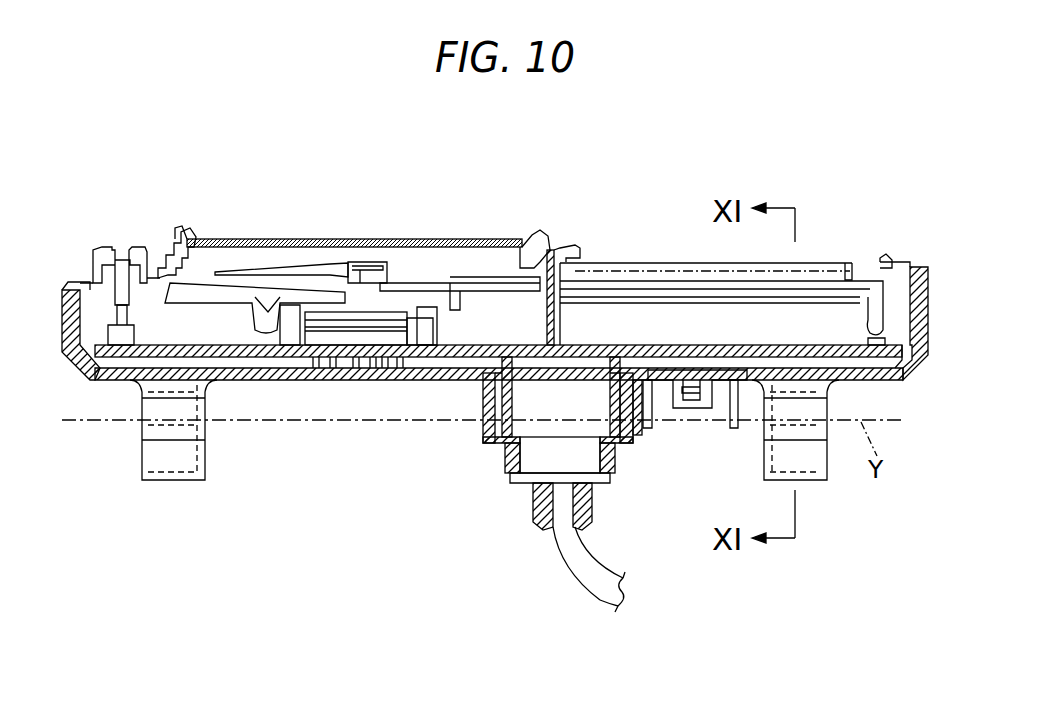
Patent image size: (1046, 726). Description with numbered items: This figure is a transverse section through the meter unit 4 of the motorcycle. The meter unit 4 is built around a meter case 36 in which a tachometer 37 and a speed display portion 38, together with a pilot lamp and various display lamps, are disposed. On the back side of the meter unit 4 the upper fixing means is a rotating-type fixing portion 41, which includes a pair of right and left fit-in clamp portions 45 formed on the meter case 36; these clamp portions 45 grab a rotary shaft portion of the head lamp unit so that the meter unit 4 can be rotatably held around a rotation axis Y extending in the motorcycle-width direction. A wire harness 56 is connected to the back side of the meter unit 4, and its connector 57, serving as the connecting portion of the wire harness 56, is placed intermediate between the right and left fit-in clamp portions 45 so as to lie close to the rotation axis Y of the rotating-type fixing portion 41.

The meter unit 4 is at (422, 232).
The meter case 36 is at (370, 382).
The tachometer 37 is at (254, 238).
The speed display portion 38 is at (630, 262).
The rotating-type fixing portion 41 is at (484, 460).
The fit-in clamp portions 45 is at (162, 482).
The wire harness 56 is at (563, 584).
The connector 57 is at (537, 405).